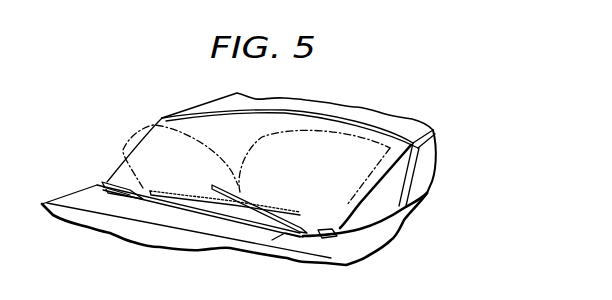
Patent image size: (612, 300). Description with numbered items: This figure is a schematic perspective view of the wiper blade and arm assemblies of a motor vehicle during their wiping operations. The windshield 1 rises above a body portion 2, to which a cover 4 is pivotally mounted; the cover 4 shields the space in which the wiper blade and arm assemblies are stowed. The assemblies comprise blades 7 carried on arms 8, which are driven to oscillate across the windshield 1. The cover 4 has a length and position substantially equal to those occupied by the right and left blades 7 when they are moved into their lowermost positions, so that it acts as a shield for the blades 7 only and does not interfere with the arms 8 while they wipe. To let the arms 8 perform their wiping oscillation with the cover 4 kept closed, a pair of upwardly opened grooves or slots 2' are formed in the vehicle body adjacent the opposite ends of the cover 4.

The windshield 1 is at (156, 142).
The body portion 2 is at (186, 209).
The upwardly opened grooves or slots 2' is at (231, 200).
The cover 4 is at (253, 232).
The wiper blades 7 is at (250, 204).
The wiper arms 8 is at (297, 229).